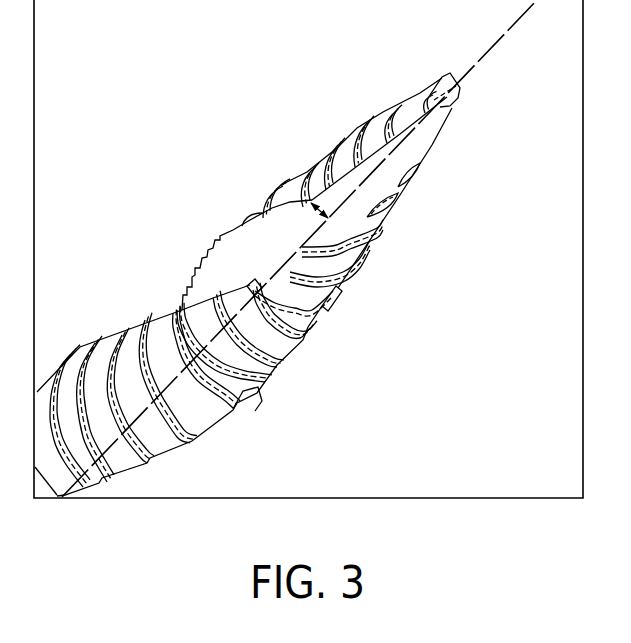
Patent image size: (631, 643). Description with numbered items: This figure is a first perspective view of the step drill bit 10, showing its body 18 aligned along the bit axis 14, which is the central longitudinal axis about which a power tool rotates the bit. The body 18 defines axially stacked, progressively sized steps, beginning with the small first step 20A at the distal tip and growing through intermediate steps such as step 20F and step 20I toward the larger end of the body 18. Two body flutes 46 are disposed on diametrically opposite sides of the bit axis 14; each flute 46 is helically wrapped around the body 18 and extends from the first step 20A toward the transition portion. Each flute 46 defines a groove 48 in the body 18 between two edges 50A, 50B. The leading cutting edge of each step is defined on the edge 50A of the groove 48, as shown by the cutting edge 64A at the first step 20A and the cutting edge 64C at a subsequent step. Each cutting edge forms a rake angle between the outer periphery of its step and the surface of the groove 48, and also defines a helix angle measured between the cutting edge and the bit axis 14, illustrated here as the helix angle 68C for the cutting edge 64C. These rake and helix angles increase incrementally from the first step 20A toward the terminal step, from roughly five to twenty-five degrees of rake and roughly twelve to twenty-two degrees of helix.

The step drill bit 10 is at (227, 49).
The bit axis 14 is at (488, 50).
The body 18 is at (391, 338).
The first step 20A is at (452, 116).
The step 20F is at (312, 318).
The step 20I is at (128, 333).
The body flute 46 is at (233, 267).
The groove 48 is at (203, 263).
The edge 50A is at (285, 205).
The edge 50B is at (320, 247).
The cutting edge 64A is at (418, 132).
The cutting edge 64C is at (343, 180).
The helix angle 68C is at (314, 203).